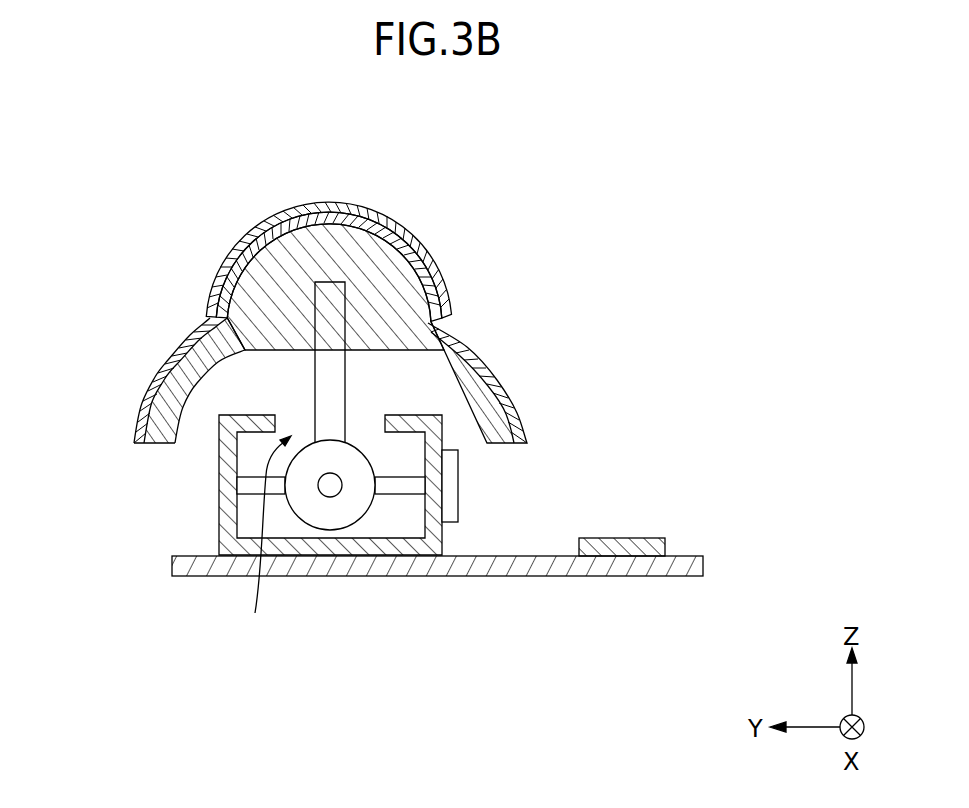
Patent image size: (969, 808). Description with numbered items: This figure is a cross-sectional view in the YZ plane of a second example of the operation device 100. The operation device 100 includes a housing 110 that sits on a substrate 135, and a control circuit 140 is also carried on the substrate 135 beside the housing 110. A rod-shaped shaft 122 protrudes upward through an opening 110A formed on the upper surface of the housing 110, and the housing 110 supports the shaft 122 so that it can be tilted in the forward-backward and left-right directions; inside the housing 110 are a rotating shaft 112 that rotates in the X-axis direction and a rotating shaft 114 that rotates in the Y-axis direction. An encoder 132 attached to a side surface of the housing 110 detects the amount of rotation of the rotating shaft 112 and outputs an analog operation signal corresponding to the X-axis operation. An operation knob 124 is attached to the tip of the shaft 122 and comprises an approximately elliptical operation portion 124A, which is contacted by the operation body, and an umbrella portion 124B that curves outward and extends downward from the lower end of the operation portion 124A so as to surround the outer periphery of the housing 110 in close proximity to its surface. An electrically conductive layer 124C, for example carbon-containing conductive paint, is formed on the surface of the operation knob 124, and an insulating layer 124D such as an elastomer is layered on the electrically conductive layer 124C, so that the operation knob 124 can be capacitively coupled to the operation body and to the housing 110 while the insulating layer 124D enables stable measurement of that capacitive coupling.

The operation device 100 is at (672, 162).
The housing 110 is at (219, 487).
The opening 110A is at (260, 540).
The rotating shaft 112 is at (402, 488).
The rotating shaft 114 is at (330, 493).
The shaft 122 is at (335, 303).
The operation knob 124 is at (97, 250).
The operation portion 124A is at (245, 275).
The umbrella portion 124B is at (195, 360).
The electrically conductive layer 124C is at (432, 258).
The insulating layer 124D is at (400, 228).
The encoder 132 is at (458, 492).
The substrate 135 is at (660, 577).
The control circuit 140 is at (618, 545).